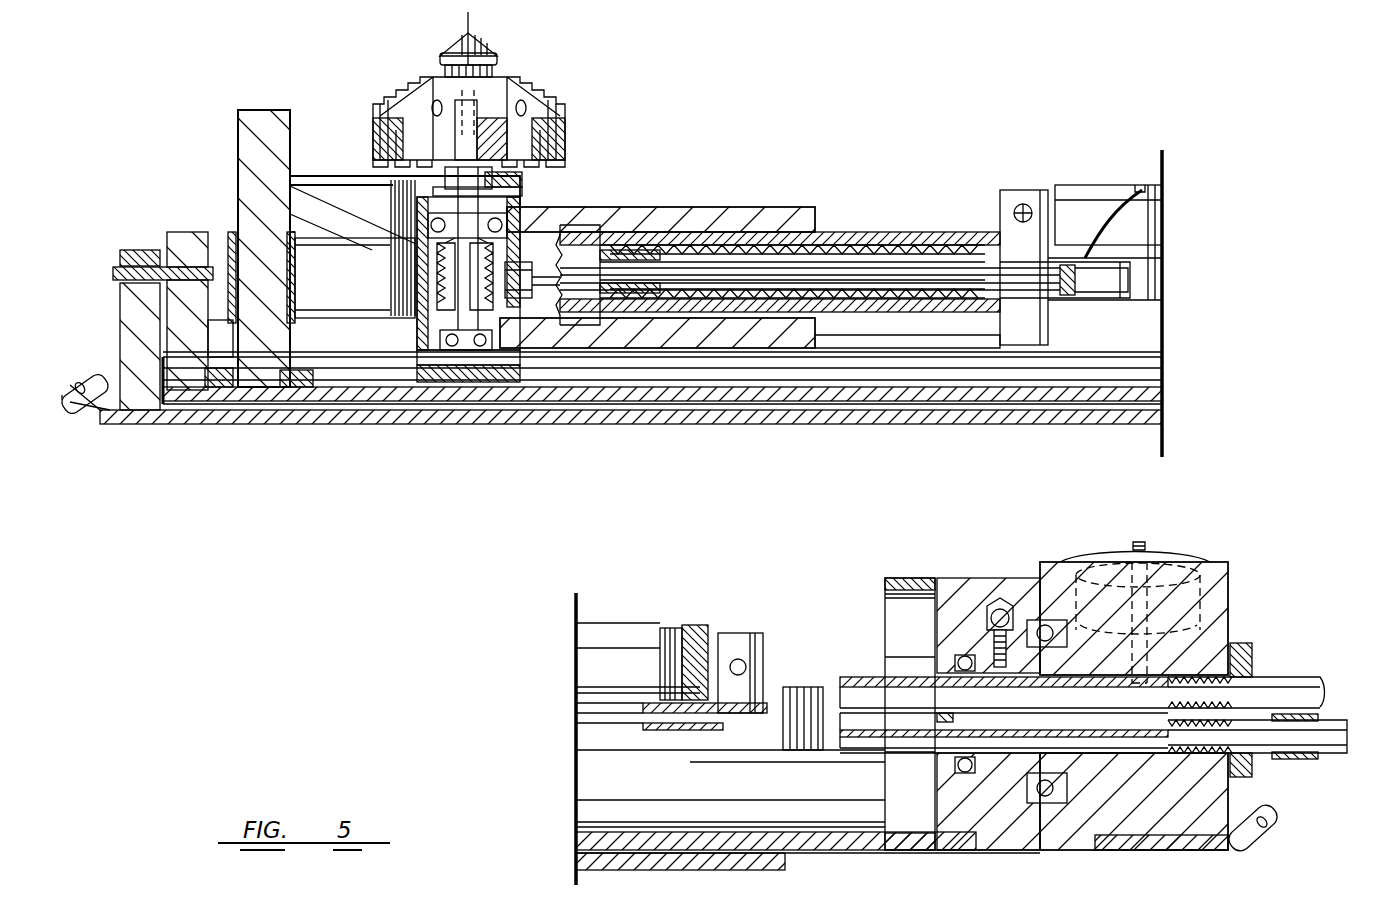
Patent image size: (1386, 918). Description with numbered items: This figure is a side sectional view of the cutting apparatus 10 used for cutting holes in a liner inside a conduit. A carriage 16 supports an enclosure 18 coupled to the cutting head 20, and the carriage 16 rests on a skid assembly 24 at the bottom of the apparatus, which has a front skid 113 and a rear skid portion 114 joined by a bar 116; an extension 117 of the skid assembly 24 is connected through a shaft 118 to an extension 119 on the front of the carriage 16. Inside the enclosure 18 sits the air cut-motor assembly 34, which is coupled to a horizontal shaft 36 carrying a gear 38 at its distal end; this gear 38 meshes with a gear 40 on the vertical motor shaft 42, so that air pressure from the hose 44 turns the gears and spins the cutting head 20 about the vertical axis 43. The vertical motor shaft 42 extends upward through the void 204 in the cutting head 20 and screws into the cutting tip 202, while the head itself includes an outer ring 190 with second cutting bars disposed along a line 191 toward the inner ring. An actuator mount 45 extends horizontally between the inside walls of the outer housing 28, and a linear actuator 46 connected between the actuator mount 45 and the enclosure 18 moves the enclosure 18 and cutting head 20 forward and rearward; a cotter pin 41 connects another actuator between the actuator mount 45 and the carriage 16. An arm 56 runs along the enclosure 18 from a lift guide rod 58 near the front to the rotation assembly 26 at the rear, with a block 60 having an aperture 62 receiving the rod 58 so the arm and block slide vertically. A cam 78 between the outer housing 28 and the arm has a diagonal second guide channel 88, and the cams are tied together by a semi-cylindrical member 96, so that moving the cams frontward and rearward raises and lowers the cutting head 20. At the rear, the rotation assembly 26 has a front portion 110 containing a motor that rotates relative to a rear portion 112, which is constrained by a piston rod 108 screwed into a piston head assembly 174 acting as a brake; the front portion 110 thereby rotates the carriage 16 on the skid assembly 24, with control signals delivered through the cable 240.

The cutting apparatus 10 is at (858, 198).
The carriage 16 is at (663, 402).
The enclosure 18 is at (650, 232).
The cutting head 20 is at (550, 85).
The skid assembly 24 is at (178, 416).
The rotation assembly 26 is at (1040, 556).
The outer housing 28 is at (920, 396).
The air cut-motor assembly 34 is at (685, 246).
The horizontal shaft 36 is at (600, 214).
The gear 38 is at (505, 303).
The gear 40 is at (540, 236).
The cotter pin 41 is at (738, 660).
The vertical motor shaft 42 is at (490, 172).
The vertical axis 43 is at (468, 30).
The hose 44 is at (1320, 755).
The actuator mount 45 is at (762, 692).
The linear actuator 46 is at (660, 628).
The arm 56 is at (406, 300).
The lift guide rod 58 is at (258, 112).
The block 60 is at (233, 233).
The aperture 62 is at (288, 331).
The cam 78 is at (304, 176).
The second guide channel 88 is at (305, 208).
The semi-cylindrical member 96 is at (488, 372).
The piston rod 108 is at (1138, 548).
The front portion 110 is at (990, 853).
The rear portion 112 is at (1219, 562).
The front skid 113 is at (106, 420).
The rear skid portion 114 is at (1213, 850).
The bar 116 is at (833, 421).
The extension 117 is at (130, 251).
The shaft 118 is at (120, 278).
The extension 119 is at (168, 232).
The piston head assembly 174 is at (1180, 602).
The outer ring 190 is at (378, 118).
The line 191 is at (420, 86).
The cutting tip 202 is at (497, 53).
The void 204 is at (476, 124).
The cable 240 is at (1278, 676).